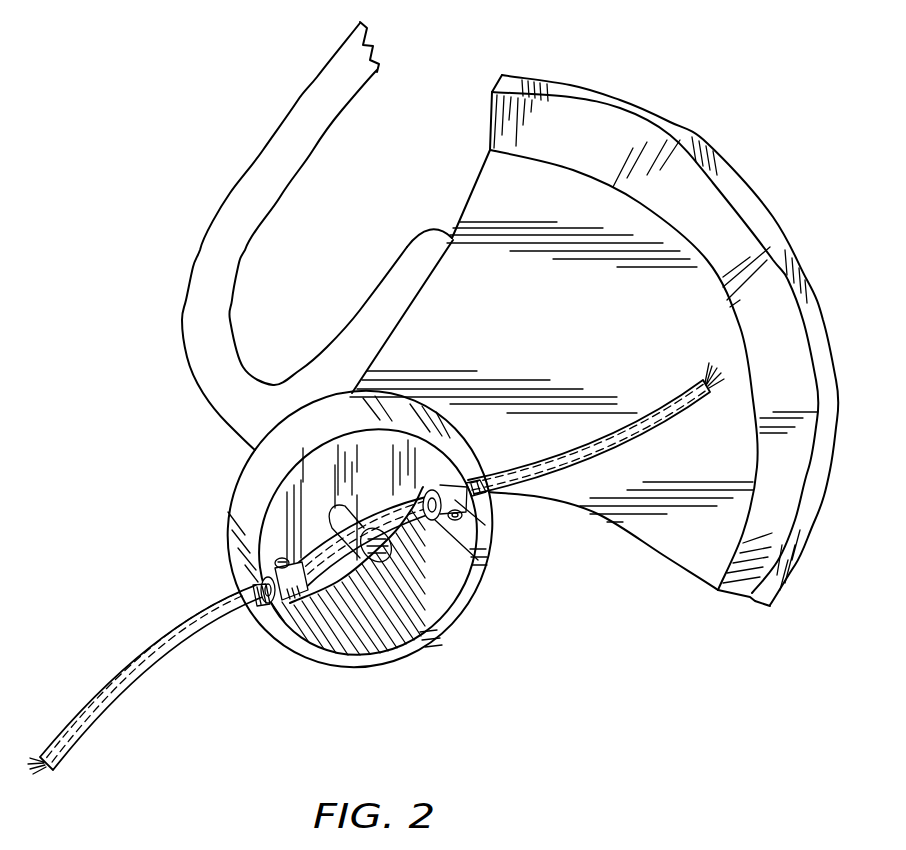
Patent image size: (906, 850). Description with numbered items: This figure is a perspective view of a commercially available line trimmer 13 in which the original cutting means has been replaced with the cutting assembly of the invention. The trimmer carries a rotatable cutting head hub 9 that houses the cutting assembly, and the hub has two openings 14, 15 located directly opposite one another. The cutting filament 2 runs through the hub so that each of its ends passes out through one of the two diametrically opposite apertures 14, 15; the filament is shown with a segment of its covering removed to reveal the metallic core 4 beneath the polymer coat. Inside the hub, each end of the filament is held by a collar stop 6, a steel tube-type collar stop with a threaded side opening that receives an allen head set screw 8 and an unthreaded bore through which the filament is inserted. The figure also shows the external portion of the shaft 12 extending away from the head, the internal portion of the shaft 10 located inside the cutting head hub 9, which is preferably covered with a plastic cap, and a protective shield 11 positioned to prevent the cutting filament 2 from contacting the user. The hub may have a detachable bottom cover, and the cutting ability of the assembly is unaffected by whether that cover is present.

The cutting filament 2 is at (637, 404).
The metallic core 4 is at (713, 388).
The collar stop 6 is at (278, 600).
The allen head set screw 8 is at (462, 521).
The cutting head hub 9 is at (473, 607).
The internal portion of the shaft 10 is at (385, 557).
The protective shield 11 is at (800, 533).
The external portion of the shaft 12 is at (262, 287).
The line trimmer 13 is at (112, 340).
The opening 14 is at (220, 586).
The opening 15 is at (487, 463).